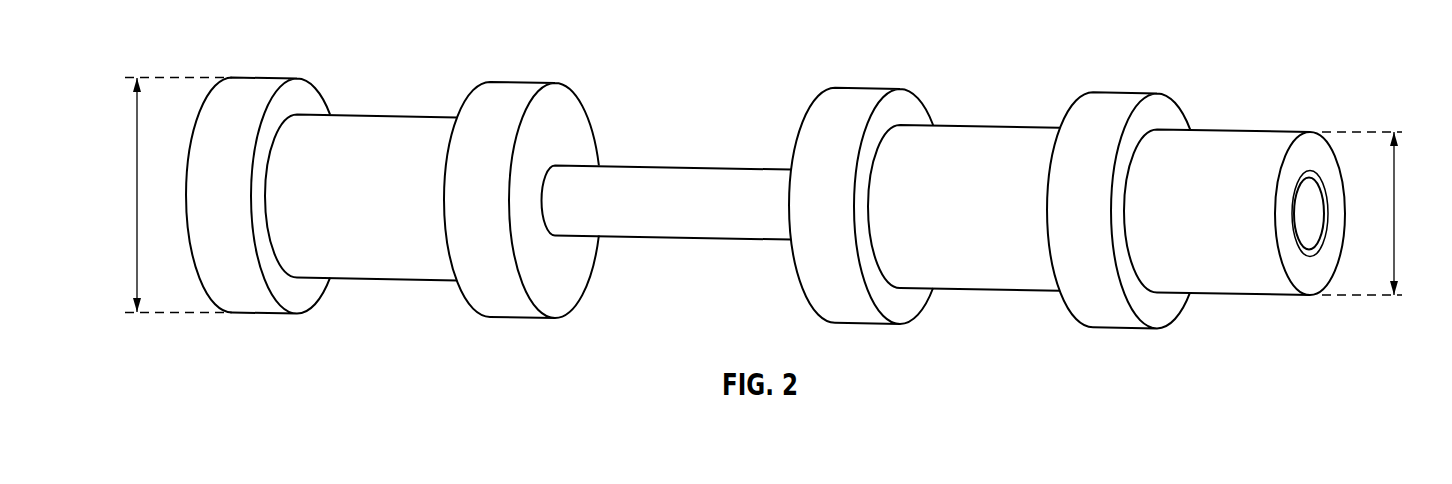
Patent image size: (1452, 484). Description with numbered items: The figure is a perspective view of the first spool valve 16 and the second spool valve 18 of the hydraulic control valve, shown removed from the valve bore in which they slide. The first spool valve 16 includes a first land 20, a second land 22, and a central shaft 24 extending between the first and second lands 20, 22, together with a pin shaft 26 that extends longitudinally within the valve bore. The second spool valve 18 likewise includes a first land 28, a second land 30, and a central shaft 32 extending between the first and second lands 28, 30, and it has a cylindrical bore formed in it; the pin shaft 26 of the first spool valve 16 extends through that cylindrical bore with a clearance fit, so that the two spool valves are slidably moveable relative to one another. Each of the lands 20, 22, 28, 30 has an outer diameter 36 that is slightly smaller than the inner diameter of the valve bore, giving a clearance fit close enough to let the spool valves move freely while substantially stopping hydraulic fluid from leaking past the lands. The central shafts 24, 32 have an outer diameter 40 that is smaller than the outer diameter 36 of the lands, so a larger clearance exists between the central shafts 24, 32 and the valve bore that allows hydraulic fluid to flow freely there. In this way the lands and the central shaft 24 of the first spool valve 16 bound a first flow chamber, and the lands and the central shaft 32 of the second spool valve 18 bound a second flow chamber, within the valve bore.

The first spool valve 16 is at (392, 183).
The second spool valve 18 is at (1067, 201).
The first land 20 is at (272, 77).
The second land 22 is at (525, 93).
The central shaft 24 is at (412, 127).
The pin shaft 26 is at (693, 178).
The first land 28 is at (862, 100).
The second land 30 is at (1120, 110).
The central shaft 32 is at (1002, 140).
The outer diameter 36 is at (135, 193).
The outer diameter 40 is at (1396, 214).